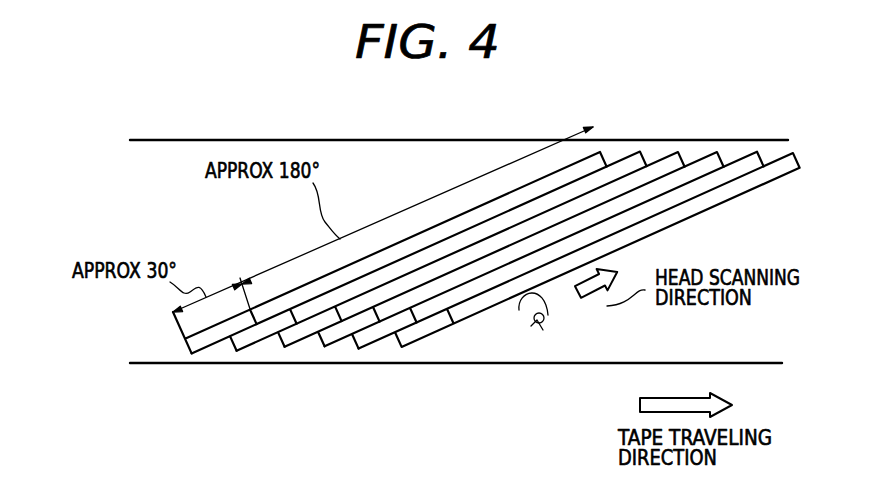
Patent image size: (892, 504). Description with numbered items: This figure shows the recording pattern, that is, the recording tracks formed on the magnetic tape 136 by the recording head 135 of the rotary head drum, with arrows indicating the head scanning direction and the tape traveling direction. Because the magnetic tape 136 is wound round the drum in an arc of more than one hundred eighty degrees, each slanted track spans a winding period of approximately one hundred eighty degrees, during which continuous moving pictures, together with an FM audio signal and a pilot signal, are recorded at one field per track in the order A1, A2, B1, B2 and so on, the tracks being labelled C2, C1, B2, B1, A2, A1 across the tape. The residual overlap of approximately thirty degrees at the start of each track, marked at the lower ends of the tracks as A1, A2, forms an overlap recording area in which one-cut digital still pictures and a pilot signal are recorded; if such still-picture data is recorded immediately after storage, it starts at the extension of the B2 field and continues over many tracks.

The recording head 135 is at (552, 321).
The magnetic tape 136 is at (503, 348).
The A1 field A1 is at (800, 162).
The A2 field A2 is at (762, 152).
The B1 field B1 is at (723, 152).
The B2 field B2 is at (684, 152).
The C1 field C1 is at (645, 152).
The C2 field C2 is at (603, 151).